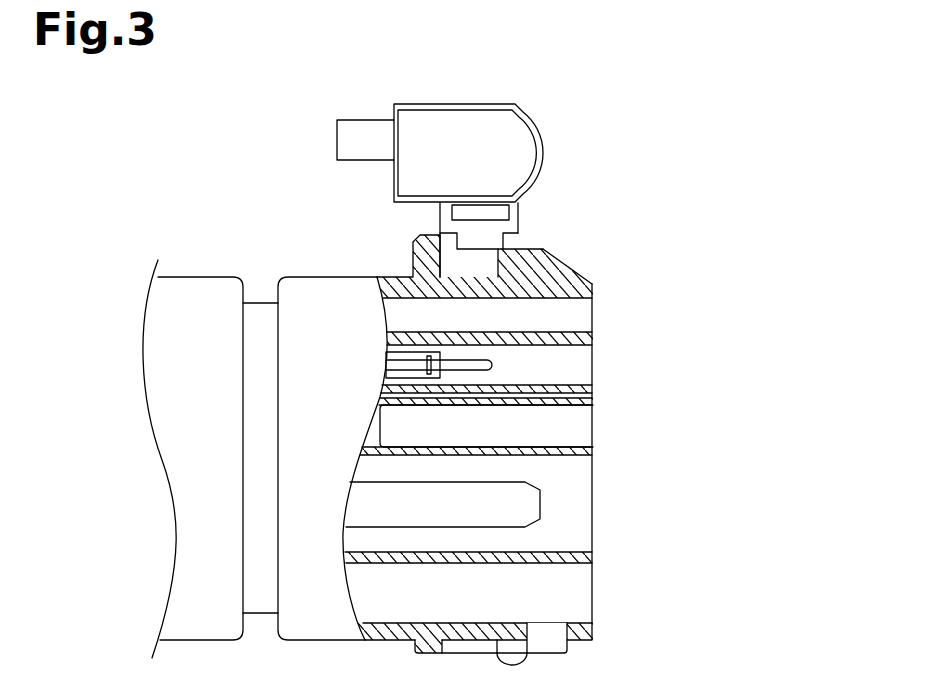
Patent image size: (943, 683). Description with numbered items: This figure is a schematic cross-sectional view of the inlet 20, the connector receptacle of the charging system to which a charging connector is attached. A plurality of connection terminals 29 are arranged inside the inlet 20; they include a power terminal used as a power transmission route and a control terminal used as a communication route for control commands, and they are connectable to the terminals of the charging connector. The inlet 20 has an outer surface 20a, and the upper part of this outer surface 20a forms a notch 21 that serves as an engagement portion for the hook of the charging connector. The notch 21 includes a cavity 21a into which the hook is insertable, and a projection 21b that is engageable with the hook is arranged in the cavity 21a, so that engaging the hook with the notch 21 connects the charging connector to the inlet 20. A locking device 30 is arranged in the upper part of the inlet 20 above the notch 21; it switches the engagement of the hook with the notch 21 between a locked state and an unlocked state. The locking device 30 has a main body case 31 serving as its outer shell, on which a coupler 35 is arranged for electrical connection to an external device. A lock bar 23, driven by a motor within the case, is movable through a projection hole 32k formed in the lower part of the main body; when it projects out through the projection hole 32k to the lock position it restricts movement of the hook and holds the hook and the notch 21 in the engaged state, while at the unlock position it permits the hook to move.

The inlet 20 is at (614, 217).
The outer surface 20a is at (563, 265).
The notch 21 is at (510, 250).
The cavity 21a is at (463, 262).
The projection 21b is at (518, 228).
The lock bar 23 is at (477, 210).
The connection terminals 29 is at (492, 365).
The locking device 30 is at (557, 108).
The main body case 31 is at (543, 152).
The projection hole 32k is at (452, 216).
The coupler 35 is at (337, 140).